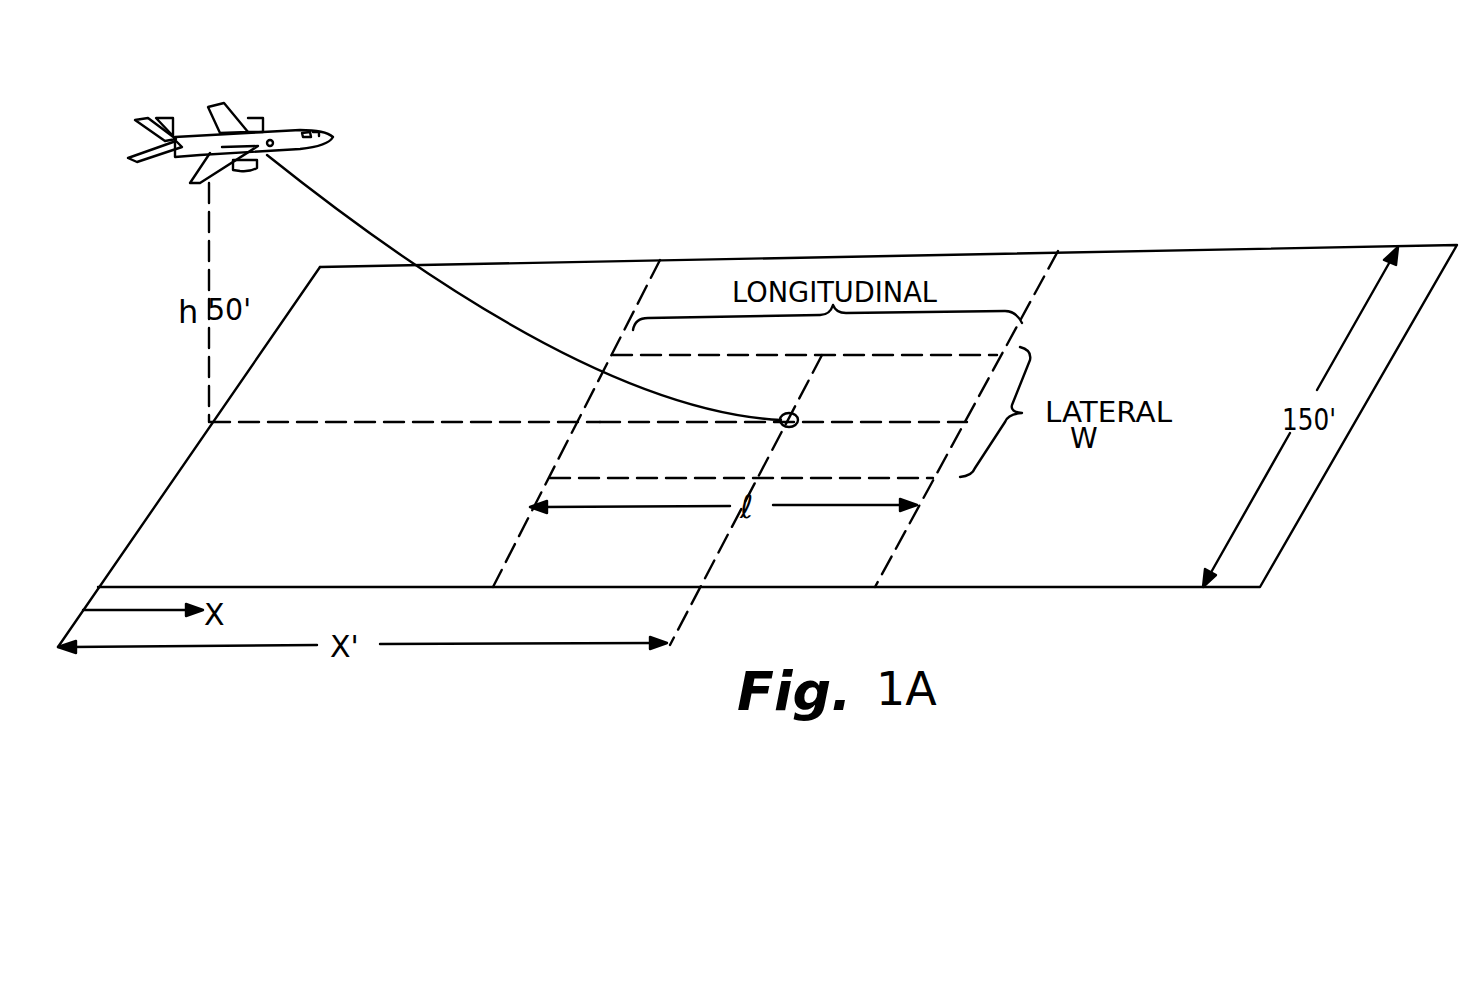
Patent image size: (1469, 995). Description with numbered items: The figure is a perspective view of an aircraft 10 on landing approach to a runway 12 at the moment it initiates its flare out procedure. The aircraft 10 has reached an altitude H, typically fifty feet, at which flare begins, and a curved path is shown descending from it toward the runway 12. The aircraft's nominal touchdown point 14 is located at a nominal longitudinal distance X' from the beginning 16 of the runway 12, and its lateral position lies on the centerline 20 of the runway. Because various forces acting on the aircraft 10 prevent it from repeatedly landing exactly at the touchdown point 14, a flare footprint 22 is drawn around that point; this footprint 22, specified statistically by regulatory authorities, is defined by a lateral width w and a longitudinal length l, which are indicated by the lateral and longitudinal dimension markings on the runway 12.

The aircraft 10 is at (296, 128).
The runway 12 is at (381, 525).
The nominal touchdown point 14 is at (795, 427).
The beginning of the runway 16 is at (198, 442).
The centerline 20 is at (397, 422).
The flare footprint 22 is at (1010, 335).